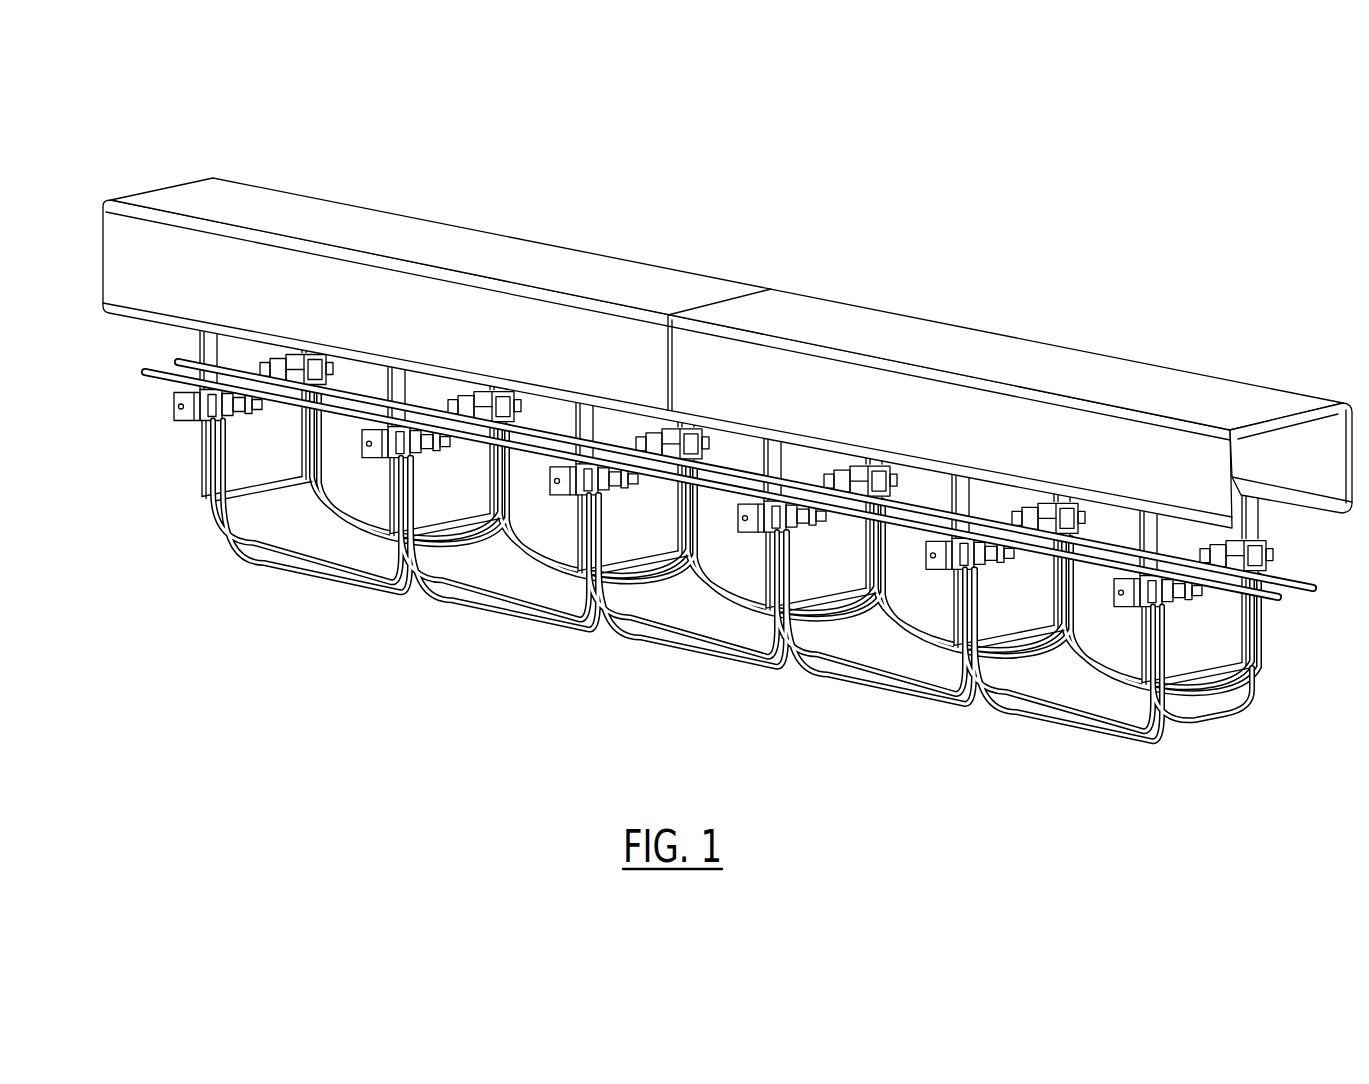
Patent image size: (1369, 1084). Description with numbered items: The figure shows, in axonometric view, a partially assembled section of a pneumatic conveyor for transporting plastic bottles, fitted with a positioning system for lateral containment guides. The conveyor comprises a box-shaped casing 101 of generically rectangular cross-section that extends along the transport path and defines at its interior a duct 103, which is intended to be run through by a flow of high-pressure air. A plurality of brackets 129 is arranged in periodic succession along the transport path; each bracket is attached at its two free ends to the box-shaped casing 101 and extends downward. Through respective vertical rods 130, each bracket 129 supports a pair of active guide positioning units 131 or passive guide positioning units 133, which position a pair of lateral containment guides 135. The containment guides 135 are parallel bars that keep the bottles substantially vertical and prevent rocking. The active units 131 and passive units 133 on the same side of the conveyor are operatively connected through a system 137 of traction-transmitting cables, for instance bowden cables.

The box-shaped casing 101 is at (910, 317).
The duct 103 is at (1302, 440).
The bracket 129 is at (203, 488).
The vertical rod 130 is at (312, 422).
The active guide positioning unit 131 is at (614, 494).
The passive guide positioning unit 133 is at (806, 528).
The lateral containment guide 135 is at (1330, 567).
The system of traction-transmitting cables 137 is at (719, 564).